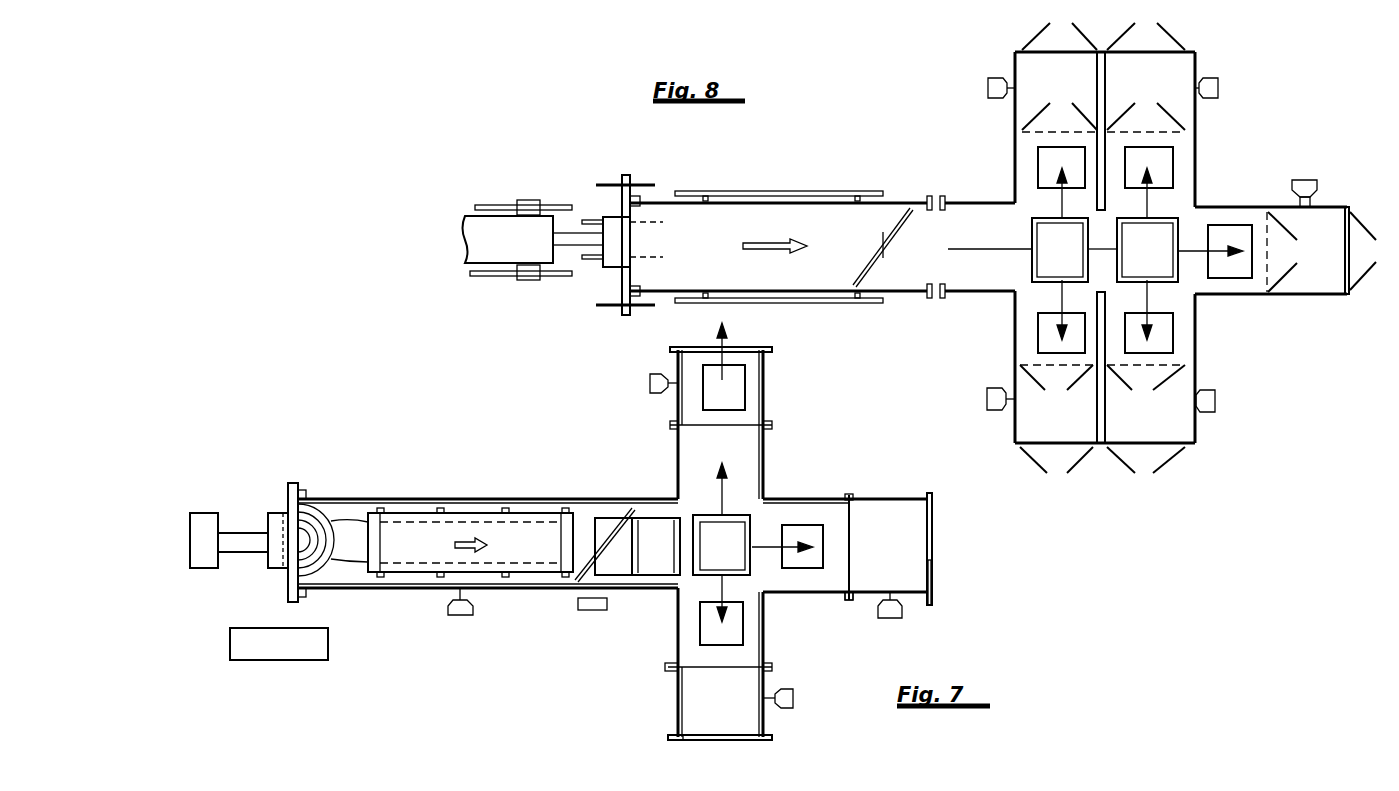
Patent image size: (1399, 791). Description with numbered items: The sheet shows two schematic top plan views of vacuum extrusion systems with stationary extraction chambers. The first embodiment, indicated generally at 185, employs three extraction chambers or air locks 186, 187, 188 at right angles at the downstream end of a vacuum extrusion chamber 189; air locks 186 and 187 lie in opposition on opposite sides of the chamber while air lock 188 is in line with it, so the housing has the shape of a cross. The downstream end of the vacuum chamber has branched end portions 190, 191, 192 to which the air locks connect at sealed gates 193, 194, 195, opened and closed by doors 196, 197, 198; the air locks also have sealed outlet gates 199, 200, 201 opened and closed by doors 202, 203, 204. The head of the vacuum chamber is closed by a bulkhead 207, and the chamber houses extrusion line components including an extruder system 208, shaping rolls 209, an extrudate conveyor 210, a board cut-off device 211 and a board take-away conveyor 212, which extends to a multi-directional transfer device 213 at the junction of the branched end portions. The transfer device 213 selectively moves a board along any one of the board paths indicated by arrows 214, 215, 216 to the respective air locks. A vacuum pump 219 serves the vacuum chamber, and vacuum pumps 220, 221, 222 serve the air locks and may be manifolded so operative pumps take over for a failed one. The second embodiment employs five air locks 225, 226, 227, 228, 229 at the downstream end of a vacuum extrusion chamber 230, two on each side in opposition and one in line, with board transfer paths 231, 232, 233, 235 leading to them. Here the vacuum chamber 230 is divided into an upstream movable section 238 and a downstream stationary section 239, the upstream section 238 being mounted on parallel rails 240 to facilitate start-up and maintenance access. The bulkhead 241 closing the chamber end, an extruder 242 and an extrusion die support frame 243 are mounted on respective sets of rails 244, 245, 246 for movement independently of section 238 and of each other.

In FIG. 7, the embodiment of the invention 185 is at (470, 488).
In FIG. 7, the extraction chamber or air lock 186 is at (773, 388).
In FIG. 7, the extraction chamber or air lock 187 is at (673, 697).
In FIG. 7, the extraction chamber or air lock 188 is at (875, 499).
In FIG. 7, the vacuum extrusion chamber 189 is at (503, 497).
In FIG. 7, the branched end portion 190 is at (765, 454).
In FIG. 7, the branched end portion 191 is at (765, 640).
In FIG. 7, the branched end portion 192 is at (800, 499).
In FIG. 7, the sealed gate 193 is at (670, 428).
In FIG. 7, the sealed gate 194 is at (665, 668).
In FIG. 7, the sealed gate 195 is at (848, 605).
In FIG. 7, the door 196 is at (733, 426).
In FIG. 7, the door 197 is at (721, 669).
In FIG. 7, the door 198 is at (849, 542).
In FIG. 7, the sealed outlet gate 199 is at (775, 352).
In FIG. 7, the sealed outlet gate 200 is at (772, 737).
In FIG. 7, the sealed outlet gate 201 is at (932, 598).
In FIG. 7, the door 202 is at (706, 347).
In FIG. 7, the door 203 is at (680, 742).
In FIG. 7, the door 204 is at (932, 533).
In FIG. 7, the bulkhead 207 is at (290, 491).
In FIG. 7, the extruder system 208 is at (234, 513).
In FIG. 7, the shaping rolls 209 is at (332, 512).
In FIG. 7, the extrudate conveyor 210 is at (408, 512).
In FIG. 7, the board cut-off device 211 is at (616, 518).
In FIG. 7, the board take-away conveyor 212 is at (621, 578).
In FIG. 7, the multi-directional transfer device 213 is at (700, 508).
In FIG. 7, the board path arrow 214 is at (727, 500).
In FIG. 7, the board path arrow 215 is at (723, 592).
In FIG. 7, the board path arrow 216 is at (765, 548).
In FIG. 7, the vacuum pump 219 is at (465, 620).
In FIG. 7, the vacuum pump 220 is at (650, 383).
In FIG. 7, the vacuum pump 221 is at (794, 698).
In FIG. 7, the vacuum pump 222 is at (892, 618).
In FIG. 8, the air lock 225 is at (1013, 66).
In FIG. 8, the air lock 226 is at (1197, 68).
In FIG. 8, the air lock 227 is at (1011, 428).
In FIG. 8, the air lock 228 is at (1193, 434).
In FIG. 8, the air lock 229 is at (1338, 303).
In FIG. 8, the vacuum extrusion chamber 230 is at (910, 195).
In FIG. 8, the board transfer path 231 is at (1057, 203).
In FIG. 8, the board transfer path 232 is at (1140, 213).
In FIG. 8, the board transfer path 233 is at (1053, 298).
In FIG. 8, the board transfer path 235 is at (1148, 298).
In FIG. 8, the upstream movable section 238 is at (740, 201).
In FIG. 8, the downstream stationary section 239 is at (980, 203).
In FIG. 8, the parallel rails 240 is at (788, 191).
In FIG. 8, the bulkhead 241 is at (626, 175).
In FIG. 8, the extruder 242 is at (466, 233).
In FIG. 8, the extrusion die support frame 243 is at (610, 268).
In FIG. 8, the rails 244 is at (602, 183).
In FIG. 8, the rails 245 is at (503, 205).
In FIG. 8, the rails 246 is at (590, 220).